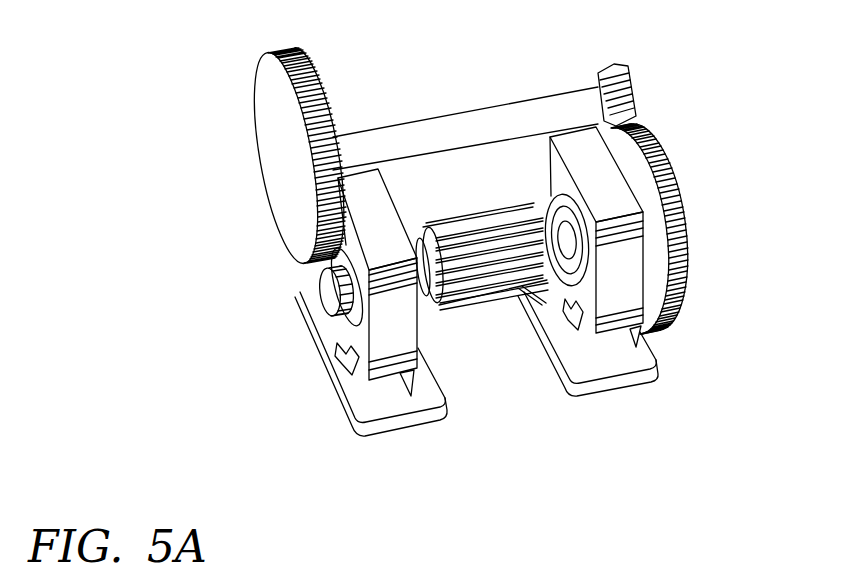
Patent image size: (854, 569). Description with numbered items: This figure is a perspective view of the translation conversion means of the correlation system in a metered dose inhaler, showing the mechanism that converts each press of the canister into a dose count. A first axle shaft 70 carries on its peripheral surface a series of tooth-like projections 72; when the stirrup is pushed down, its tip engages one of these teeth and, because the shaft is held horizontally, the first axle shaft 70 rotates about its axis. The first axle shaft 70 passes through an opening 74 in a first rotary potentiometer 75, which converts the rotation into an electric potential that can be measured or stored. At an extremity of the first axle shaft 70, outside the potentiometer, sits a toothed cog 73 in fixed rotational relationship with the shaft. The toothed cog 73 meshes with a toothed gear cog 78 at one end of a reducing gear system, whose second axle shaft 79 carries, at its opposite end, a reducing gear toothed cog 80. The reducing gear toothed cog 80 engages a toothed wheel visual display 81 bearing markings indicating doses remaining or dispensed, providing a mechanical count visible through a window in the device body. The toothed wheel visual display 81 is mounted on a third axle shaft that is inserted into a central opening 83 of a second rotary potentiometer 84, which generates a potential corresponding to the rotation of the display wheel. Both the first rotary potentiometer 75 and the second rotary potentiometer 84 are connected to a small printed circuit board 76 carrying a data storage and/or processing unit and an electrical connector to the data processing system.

The first axle shaft 70 is at (426, 295).
The tooth-like projections 72 is at (490, 296).
The toothed cog 73 is at (318, 317).
The opening 74 is at (352, 343).
The first rotary potentiometer 75 is at (383, 382).
The printed circuit board 76 is at (585, 368).
The toothed gear cog 78 is at (272, 137).
The second axle shaft 79 is at (408, 120).
The reducing gear toothed cog 80 is at (620, 65).
The toothed wheel visual display 81 is at (657, 127).
The central opening 83 is at (553, 185).
The second rotary potentiometer 84 is at (667, 360).